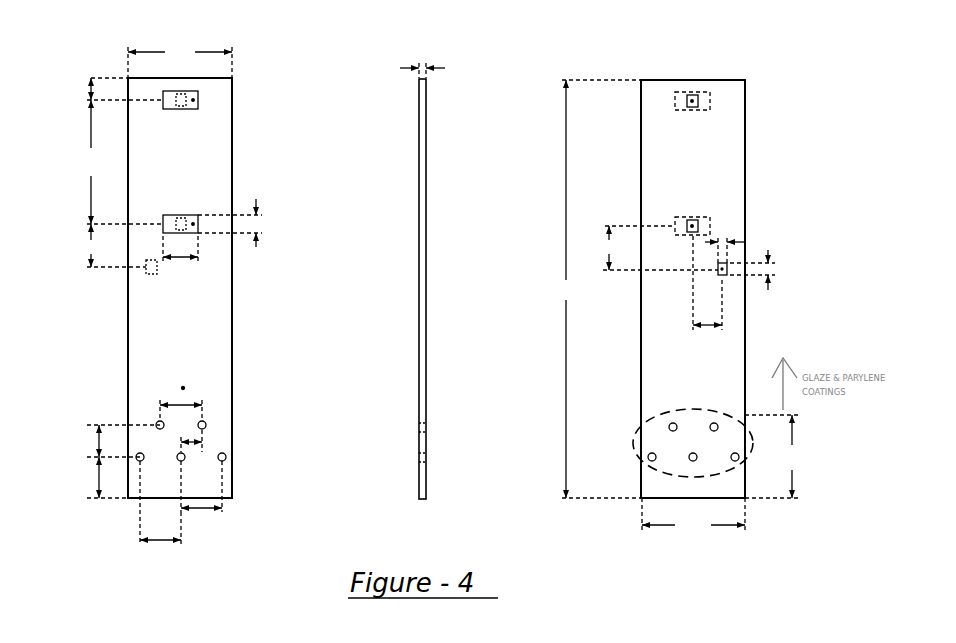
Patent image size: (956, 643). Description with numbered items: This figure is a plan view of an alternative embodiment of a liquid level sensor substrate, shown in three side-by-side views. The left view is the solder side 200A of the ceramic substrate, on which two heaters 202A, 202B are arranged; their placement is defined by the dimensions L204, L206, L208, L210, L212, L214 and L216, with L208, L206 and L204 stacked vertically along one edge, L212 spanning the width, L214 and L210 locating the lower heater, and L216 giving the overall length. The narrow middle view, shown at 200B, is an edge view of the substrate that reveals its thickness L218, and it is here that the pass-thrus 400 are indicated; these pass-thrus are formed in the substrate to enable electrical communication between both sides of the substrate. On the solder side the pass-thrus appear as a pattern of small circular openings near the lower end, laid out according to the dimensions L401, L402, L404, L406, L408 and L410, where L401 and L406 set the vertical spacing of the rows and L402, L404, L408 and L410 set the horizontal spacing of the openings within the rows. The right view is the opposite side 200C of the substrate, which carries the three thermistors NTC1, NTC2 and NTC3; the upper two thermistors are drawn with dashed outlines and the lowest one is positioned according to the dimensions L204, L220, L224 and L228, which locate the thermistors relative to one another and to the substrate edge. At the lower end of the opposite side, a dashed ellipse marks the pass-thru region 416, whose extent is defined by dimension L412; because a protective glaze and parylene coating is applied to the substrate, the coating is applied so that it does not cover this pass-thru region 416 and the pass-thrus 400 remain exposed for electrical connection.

The solder side 200A is at (183, 388).
The side view of substrate 200B is at (418, 277).
The opposite side 200C is at (686, 80).
The heater 202A is at (198, 219).
The heater 202B is at (198, 103).
The pass-thrus 400 is at (397, 289).
The pass-thru region 416 is at (645, 483).
The thermistor NTC1 is at (727, 263).
The thermistor NTC2 is at (708, 220).
The thermistor NTC3 is at (708, 108).
The dimension L204 is at (392, 247).
The dimension L206 is at (85, 162).
The dimension L208 is at (91, 78).
The dimension L210 is at (198, 257).
The dimension L212 is at (436, 288).
The dimension L214 is at (256, 199).
The dimension L216 is at (672, 289).
The thickness L218 is at (446, 68).
The dimension L220 is at (722, 325).
The dimension L224 is at (745, 242).
The dimension L228 is at (768, 290).
The dimension L401 is at (99, 425).
The dimension L402 is at (202, 405).
The dimension L404 is at (202, 442).
The dimension L406 is at (99, 498).
The dimension L408 is at (222, 508).
The dimension L410 is at (181, 540).
The dimension L412 is at (778, 456).